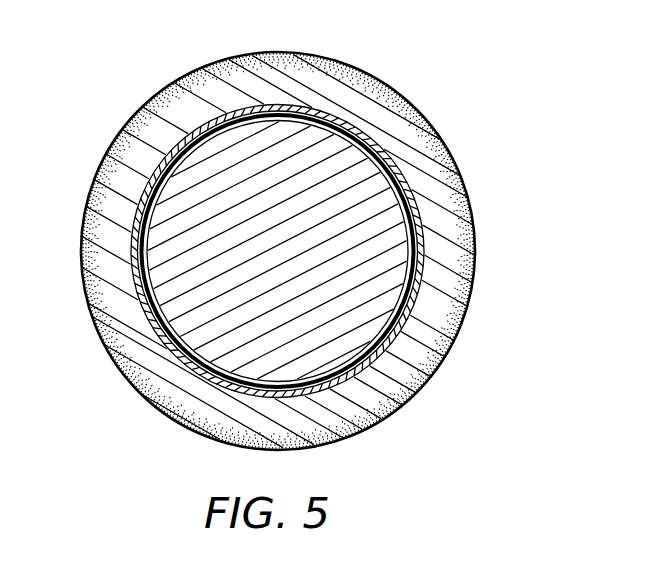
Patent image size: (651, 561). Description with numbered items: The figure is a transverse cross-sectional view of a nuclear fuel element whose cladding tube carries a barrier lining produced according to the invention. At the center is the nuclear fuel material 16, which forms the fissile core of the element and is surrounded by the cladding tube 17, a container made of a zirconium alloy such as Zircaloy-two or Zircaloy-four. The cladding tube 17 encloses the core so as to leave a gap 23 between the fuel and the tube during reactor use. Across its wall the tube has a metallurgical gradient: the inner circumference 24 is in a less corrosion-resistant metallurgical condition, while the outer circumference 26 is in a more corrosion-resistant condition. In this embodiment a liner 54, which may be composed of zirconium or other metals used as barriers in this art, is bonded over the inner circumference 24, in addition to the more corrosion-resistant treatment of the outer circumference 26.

The nuclear fuel material 16 is at (347, 158).
The cladding tube 17 is at (357, 62).
The gap 23 is at (285, 113).
The inner circumference 24 is at (398, 168).
The outer circumference 26 is at (457, 205).
The liner 54 is at (425, 265).